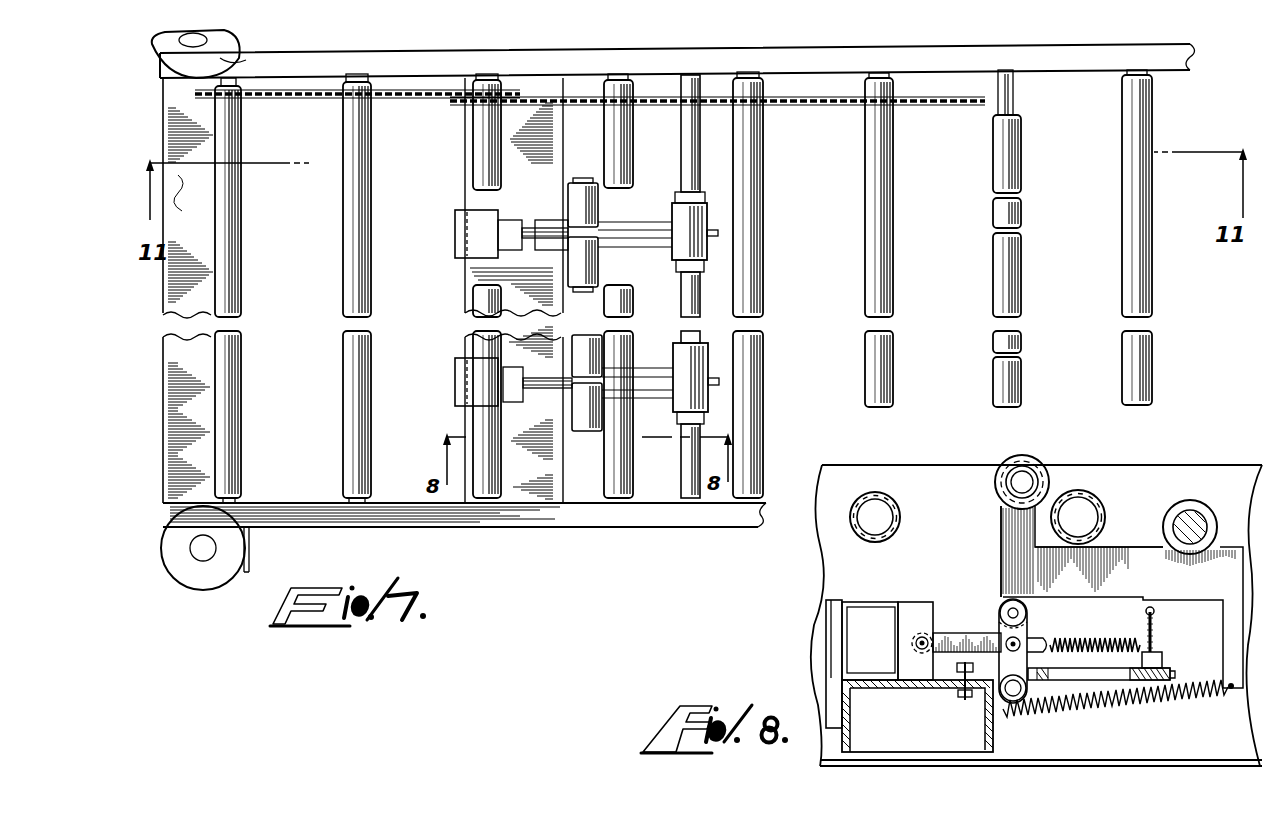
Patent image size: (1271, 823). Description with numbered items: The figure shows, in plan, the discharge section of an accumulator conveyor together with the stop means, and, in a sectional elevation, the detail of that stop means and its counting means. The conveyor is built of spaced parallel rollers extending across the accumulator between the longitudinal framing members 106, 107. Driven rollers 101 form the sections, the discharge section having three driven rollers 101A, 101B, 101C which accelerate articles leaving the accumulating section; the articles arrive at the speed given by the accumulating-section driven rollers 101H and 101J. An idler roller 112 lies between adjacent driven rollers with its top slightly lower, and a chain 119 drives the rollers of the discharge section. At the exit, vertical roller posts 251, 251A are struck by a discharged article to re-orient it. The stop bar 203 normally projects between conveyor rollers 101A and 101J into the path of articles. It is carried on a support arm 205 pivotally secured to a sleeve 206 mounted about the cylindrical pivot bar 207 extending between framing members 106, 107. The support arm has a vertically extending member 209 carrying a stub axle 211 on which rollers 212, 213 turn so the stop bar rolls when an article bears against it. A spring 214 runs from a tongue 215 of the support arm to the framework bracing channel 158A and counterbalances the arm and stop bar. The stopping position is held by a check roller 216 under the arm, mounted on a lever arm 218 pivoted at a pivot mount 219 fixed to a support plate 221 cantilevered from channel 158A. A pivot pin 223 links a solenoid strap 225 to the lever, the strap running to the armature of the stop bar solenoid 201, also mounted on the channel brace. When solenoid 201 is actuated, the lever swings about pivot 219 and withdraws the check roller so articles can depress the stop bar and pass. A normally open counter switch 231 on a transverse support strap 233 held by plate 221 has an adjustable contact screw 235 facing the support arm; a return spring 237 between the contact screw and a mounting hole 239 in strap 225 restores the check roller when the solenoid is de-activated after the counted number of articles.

In FIG. 7, the driven rollers 101 is at (1132, 118).
In FIG. 7, the driven roller 101A is at (473, 118).
In FIG. 8, the driven roller 101A is at (866, 540).
In FIG. 7, the driven roller 101B is at (343, 235).
In FIG. 7, the driven roller 101C is at (242, 122).
In FIG. 7, the driven roller 101H is at (1021, 121).
In FIG. 7, the driven roller 101J is at (603, 88).
In FIG. 8, the driven roller 101J is at (1066, 492).
In FIG. 7, the longitudinal framing member 106 is at (648, 512).
In FIG. 7, the longitudinal framing member 107 is at (760, 62).
In FIG. 8, the longitudinal framing member 107 is at (818, 639).
In FIG. 7, the idler roller 112 is at (764, 124).
In FIG. 7, the chain 119 is at (416, 90).
In FIG. 7, the framework bracing channel 158A is at (472, 272).
In FIG. 8, the framework bracing channel 158A is at (878, 708).
In FIG. 7, the stop bar solenoid 201 is at (455, 233).
In FIG. 8, the stop bar solenoid 201 is at (877, 614).
In FIG. 8, the stop bar 203 is at (1006, 472).
In FIG. 7, the support arm 205 is at (656, 228).
In FIG. 8, the support arm 205 is at (1115, 565).
In FIG. 7, the sleeve 206 is at (688, 249).
In FIG. 8, the sleeve 206 is at (1178, 523).
In FIG. 7, the cylindrical pivot bar 207 is at (680, 132).
In FIG. 8, the cylindrical pivot bar 207 is at (1181, 525).
In FIG. 8, the vertically extending member 209 is at (1020, 528).
In FIG. 8, the stub axle 211 is at (1010, 482).
In FIG. 7, the roller 212 is at (599, 262).
In FIG. 8, the roller 212 is at (1020, 458).
In FIG. 7, the roller 213 is at (599, 200).
In FIG. 8, the spring 214 is at (1160, 705).
In FIG. 8, the tongue 215 is at (1256, 700).
In FIG. 8, the check roller 216 is at (1004, 598).
In FIG. 8, the lever arm 218 is at (1022, 660).
In FIG. 8, the pivot mount 219 is at (1010, 705).
In FIG. 8, the support plate 221 is at (1090, 675).
In FIG. 8, the pivot pin 223 is at (991, 680).
In FIG. 7, the solenoid strap 225 is at (522, 228).
In FIG. 8, the solenoid strap 225 is at (980, 619).
In FIG. 8, the counter switch 231 is at (1160, 653).
In FIG. 8, the transverse support strap 233 is at (1172, 670).
In FIG. 8, the contact screw 235 is at (1154, 614).
In FIG. 8, the return spring 237 is at (1092, 644).
In FIG. 8, the mounting hole 239 is at (1040, 636).
In FIG. 7, the vertical roller post 251 is at (240, 66).
In FIG. 7, the vertical roller post 251A is at (230, 556).